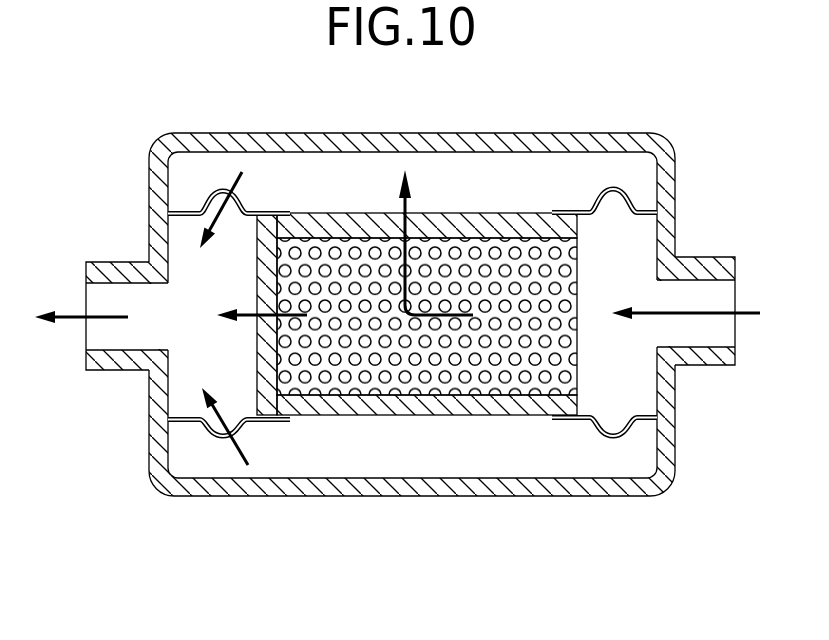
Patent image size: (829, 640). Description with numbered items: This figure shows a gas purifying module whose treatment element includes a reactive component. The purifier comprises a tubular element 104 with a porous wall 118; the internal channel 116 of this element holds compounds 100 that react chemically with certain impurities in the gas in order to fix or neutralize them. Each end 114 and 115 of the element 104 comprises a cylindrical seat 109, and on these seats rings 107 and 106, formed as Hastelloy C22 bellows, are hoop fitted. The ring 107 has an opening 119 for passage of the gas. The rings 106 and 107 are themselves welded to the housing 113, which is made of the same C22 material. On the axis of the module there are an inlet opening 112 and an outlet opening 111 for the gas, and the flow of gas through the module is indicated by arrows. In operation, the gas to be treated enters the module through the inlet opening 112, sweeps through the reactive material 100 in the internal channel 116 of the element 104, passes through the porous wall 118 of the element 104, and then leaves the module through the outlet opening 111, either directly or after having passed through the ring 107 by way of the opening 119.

The compounds 100 is at (332, 329).
The tubular element 104 is at (546, 432).
The ring 106 is at (626, 453).
The ring 107 is at (207, 444).
The cylindrical seat 109 is at (273, 213).
The outlet opening 111 is at (135, 302).
The inlet opening 112 is at (680, 297).
The housing 113 is at (330, 507).
The end 114 is at (308, 215).
The end 115 is at (570, 303).
The internal channel 116 is at (386, 318).
The porous wall 118 is at (268, 362).
The opening 119 is at (230, 445).